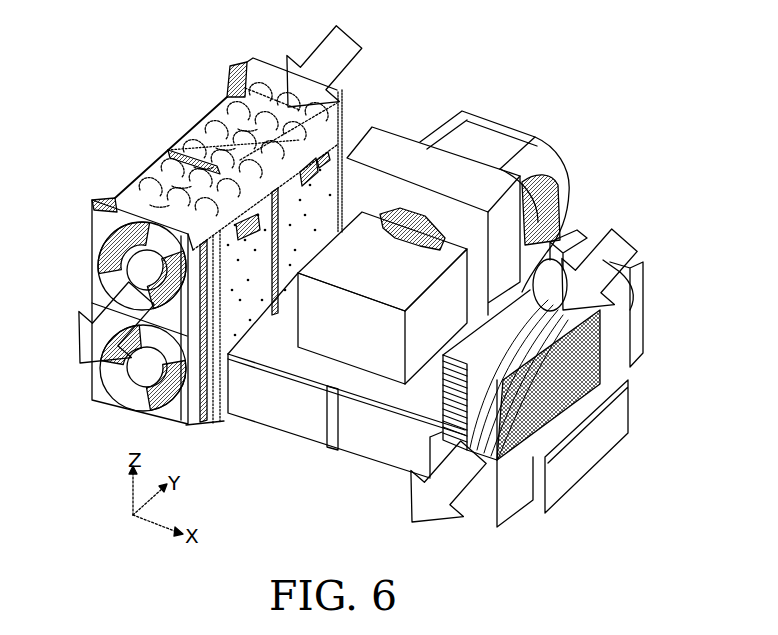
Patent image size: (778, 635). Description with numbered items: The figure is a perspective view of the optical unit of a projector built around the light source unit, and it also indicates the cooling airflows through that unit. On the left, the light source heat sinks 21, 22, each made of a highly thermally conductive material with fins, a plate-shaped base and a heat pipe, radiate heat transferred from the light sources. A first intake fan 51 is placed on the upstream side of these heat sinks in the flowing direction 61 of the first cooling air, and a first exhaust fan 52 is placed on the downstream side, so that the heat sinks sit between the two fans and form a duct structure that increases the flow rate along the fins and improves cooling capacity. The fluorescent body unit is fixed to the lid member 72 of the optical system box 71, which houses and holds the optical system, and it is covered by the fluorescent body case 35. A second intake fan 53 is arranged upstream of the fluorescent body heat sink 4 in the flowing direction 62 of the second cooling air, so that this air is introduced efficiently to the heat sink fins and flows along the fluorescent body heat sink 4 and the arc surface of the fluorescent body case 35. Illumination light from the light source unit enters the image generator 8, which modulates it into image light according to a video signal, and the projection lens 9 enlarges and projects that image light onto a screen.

The fluorescent body heat sink 4 is at (563, 385).
The image generator 8 is at (380, 352).
The projection lens 9 is at (478, 122).
The light source heat sink 21 is at (153, 167).
The light source heat sink 22 is at (197, 127).
The fluorescent body case 35 is at (497, 462).
The first intake fan 51 is at (260, 77).
The first exhaust fan 52 is at (107, 200).
The second intake fan 53 is at (585, 242).
The flowing direction of the first cooling air 61 is at (340, 58).
The flowing direction of the second cooling air 62 is at (618, 247).
The optical system box 71 is at (253, 412).
The lid member 72 is at (297, 412).